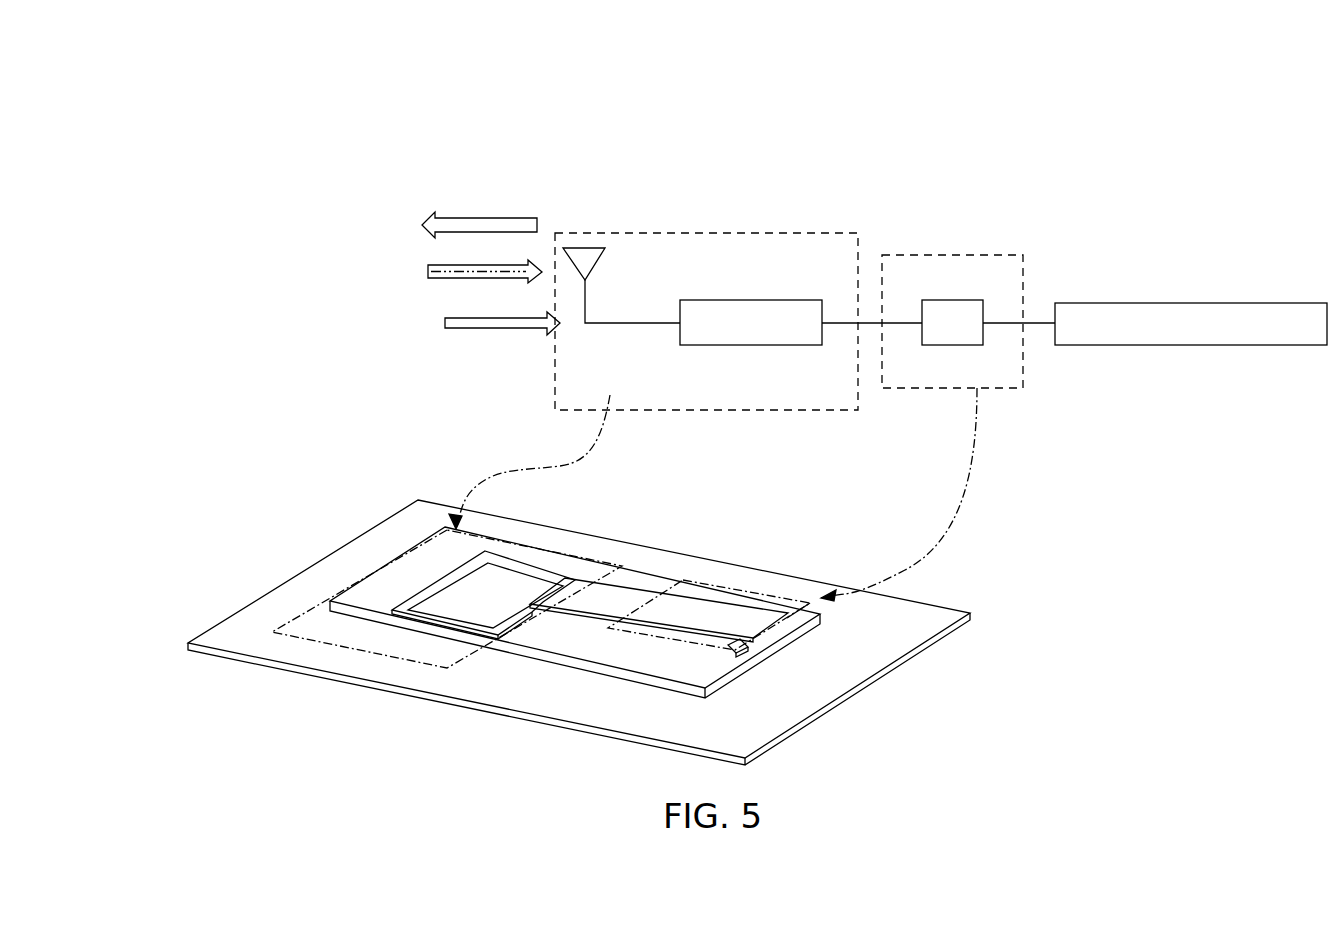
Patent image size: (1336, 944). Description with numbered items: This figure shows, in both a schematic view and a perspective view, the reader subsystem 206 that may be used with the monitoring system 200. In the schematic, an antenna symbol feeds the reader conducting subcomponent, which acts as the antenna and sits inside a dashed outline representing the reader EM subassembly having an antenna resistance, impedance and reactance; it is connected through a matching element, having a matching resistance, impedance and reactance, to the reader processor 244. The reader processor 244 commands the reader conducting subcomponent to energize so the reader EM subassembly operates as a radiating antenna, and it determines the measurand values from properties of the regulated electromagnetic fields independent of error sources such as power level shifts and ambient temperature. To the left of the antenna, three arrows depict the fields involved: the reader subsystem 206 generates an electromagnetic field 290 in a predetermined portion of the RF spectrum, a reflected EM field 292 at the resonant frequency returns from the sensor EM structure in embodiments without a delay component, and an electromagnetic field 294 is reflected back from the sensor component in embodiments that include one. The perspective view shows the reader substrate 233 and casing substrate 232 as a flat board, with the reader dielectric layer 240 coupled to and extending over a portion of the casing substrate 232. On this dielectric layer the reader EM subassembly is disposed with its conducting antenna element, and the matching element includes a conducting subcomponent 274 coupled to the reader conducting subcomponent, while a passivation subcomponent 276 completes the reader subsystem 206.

The monitoring system 200 is at (470, 133).
The reader subsystem 206 is at (600, 187).
The casing substrate 232 is at (284, 608).
The reader substrate 233 is at (579, 689).
The reader dielectric layer 240 is at (407, 577).
The reader processor 244 is at (1195, 303).
The conducting subcomponent 274 is at (645, 630).
The passivation subcomponent 276 is at (755, 617).
The electromagnetic field 290 is at (425, 217).
The reflected EM field 292 is at (428, 270).
The electromagnetic field 294 is at (445, 323).